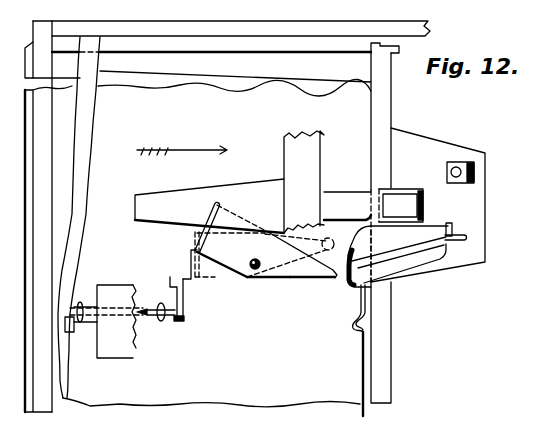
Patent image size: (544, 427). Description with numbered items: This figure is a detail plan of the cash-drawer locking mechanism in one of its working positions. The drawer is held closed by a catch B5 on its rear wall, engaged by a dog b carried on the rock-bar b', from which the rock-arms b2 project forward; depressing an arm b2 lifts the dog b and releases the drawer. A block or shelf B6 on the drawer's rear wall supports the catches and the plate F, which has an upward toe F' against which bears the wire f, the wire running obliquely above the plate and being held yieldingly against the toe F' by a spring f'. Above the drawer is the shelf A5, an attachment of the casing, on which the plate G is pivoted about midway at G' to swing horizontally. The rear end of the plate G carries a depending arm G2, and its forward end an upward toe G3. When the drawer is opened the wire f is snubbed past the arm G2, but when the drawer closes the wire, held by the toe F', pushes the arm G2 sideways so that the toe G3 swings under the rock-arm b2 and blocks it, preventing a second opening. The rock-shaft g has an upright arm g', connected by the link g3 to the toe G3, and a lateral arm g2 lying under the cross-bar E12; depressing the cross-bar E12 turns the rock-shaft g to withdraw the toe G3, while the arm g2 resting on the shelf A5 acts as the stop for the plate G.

The shelf A5 is at (192, 249).
The rock-arm b2 is at (209, 206).
The rock-bar b' is at (304, 182).
The dog b is at (347, 206).
The catch B5 is at (416, 184).
The block or shelf B6 is at (472, 191).
The plate F is at (398, 256).
The toe or lug F' is at (456, 221).
The wire f is at (456, 247).
The spring f' is at (350, 350).
The plate G is at (266, 241).
The pivot G' is at (285, 275).
The depending arm G2 is at (333, 279).
The toe G3 is at (212, 227).
The link g3 is at (185, 266).
The upright rock-arm g' is at (186, 299).
The rock-shaft g is at (122, 323).
The lateral rock-arm g2 is at (70, 336).
The cross-bar E12 is at (116, 321).